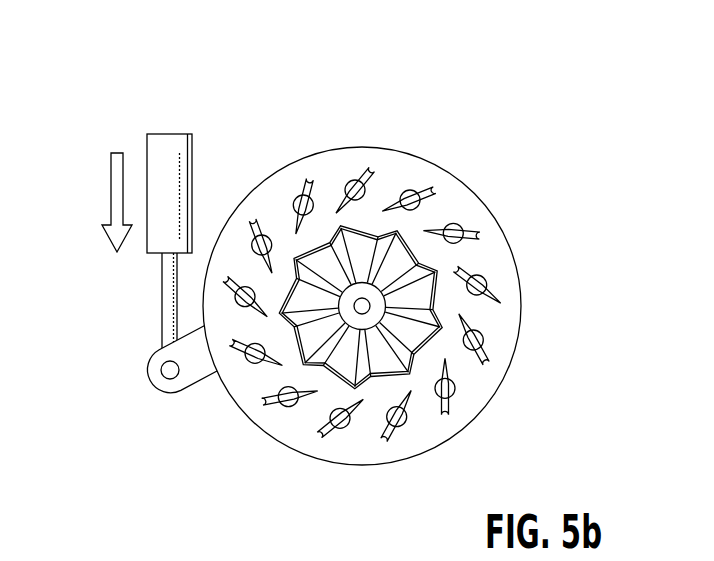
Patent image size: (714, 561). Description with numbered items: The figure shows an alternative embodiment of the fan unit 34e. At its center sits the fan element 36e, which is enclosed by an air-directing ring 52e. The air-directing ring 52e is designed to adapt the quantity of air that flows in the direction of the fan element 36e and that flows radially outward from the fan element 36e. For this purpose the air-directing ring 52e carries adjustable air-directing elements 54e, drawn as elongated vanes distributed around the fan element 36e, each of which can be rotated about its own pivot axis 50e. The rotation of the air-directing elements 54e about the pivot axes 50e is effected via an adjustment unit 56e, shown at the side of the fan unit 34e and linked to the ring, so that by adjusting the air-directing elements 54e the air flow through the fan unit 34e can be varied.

The fan unit 34e is at (408, 266).
The fan element 36e is at (420, 300).
The pivot axis 50e is at (405, 195).
The air-directing ring 52e is at (494, 209).
The air-directing elements 54e is at (437, 190).
The adjustment unit 56e is at (138, 126).